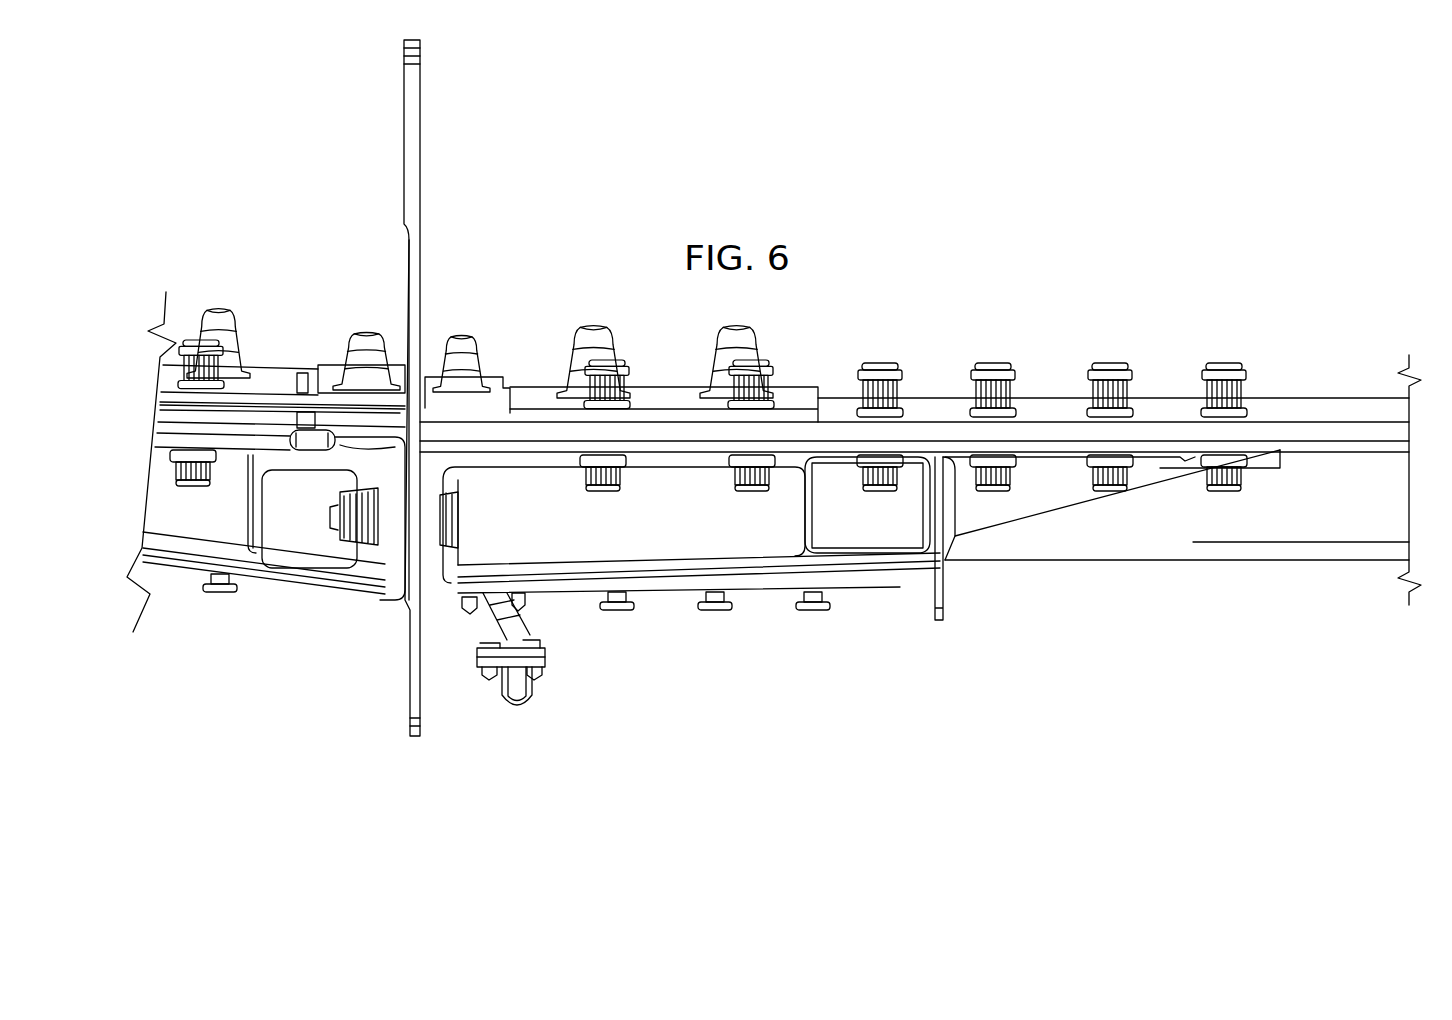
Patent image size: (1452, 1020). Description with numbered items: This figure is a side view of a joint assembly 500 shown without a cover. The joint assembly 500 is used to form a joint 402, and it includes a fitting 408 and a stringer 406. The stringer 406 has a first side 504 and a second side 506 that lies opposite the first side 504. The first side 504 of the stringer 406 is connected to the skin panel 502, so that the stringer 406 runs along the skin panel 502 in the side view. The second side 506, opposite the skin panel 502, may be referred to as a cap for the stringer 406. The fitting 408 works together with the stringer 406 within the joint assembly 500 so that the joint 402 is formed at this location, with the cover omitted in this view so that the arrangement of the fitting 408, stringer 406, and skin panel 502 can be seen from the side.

The joint assembly 500 is at (1262, 325).
The skin panel 502 is at (1316, 420).
The first side 504 is at (1352, 455).
The stringer 406 is at (1308, 515).
The fitting 408 is at (1163, 480).
The joint 402 is at (1085, 504).
The second side 506 is at (1310, 562).